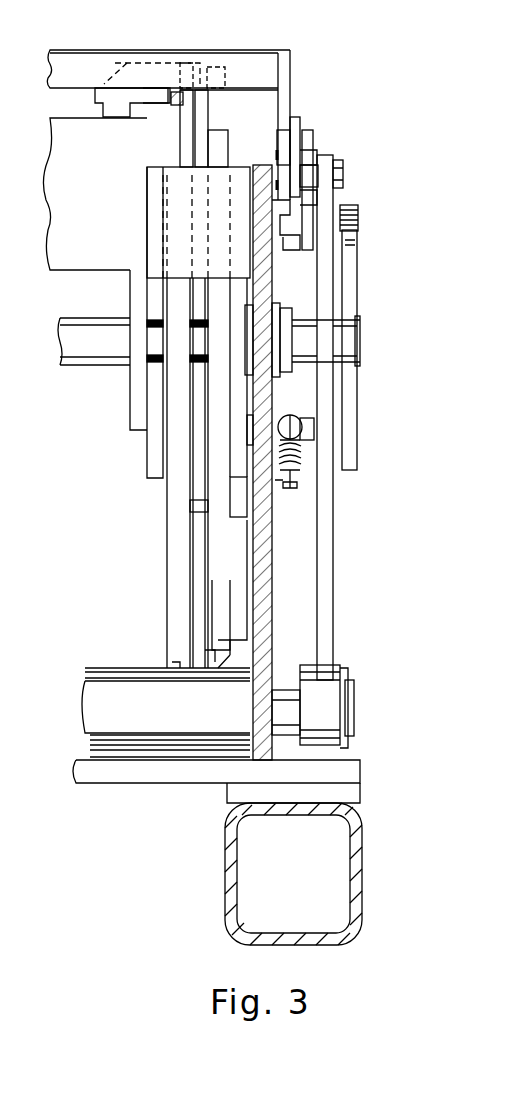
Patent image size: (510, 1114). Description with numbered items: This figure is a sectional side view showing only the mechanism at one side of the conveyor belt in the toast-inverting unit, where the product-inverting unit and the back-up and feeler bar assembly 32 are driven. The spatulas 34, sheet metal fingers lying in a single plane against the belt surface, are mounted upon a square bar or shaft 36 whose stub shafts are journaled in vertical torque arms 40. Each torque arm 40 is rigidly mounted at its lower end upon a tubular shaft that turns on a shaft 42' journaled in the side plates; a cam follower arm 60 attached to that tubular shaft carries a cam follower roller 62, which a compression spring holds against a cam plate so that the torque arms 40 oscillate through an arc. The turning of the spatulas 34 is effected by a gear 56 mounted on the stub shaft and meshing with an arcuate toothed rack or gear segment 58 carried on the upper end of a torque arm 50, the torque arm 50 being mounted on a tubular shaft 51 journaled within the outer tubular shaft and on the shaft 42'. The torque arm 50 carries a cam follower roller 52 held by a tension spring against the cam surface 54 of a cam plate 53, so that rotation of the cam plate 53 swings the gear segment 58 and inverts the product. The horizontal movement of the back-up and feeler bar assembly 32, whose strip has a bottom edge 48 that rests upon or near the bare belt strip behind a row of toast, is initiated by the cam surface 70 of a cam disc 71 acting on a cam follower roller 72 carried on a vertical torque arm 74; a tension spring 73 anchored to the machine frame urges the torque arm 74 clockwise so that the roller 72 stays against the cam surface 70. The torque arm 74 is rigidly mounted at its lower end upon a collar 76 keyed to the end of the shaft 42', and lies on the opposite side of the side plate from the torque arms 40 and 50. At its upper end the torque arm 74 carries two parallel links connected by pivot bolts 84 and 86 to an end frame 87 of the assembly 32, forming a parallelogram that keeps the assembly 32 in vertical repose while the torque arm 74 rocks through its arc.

The back-up and feeler bar assembly 32 is at (296, 56).
The spatulas 34 is at (136, 105).
The square bar or shaft 36 is at (160, 93).
The gear 56 is at (188, 97).
The bottom edge 48 is at (184, 120).
The torque arm 50 is at (169, 570).
The cam follower roller 52 is at (150, 350).
The cam plate 53 is at (147, 452).
The cam surface 54 is at (160, 480).
The vertical torque arms 40 is at (229, 587).
The cam follower roller 62 is at (238, 518).
The cam follower arm 60 is at (240, 467).
The cam follower roller 72 is at (362, 345).
The vertical torque arm 74 is at (342, 548).
The cam surface 70 is at (355, 239).
The cam disc 71 is at (351, 209).
The pivot bolt 84 is at (300, 127).
The pivot bolt 86 is at (319, 172).
The end frame 87 is at (278, 159).
The tension spring 73 is at (300, 449).
The tubular shaft 51 is at (174, 668).
The arcuate toothed rack or gear segment 58 is at (210, 672).
The collars 76 is at (334, 691).
The shaft 42' is at (369, 708).